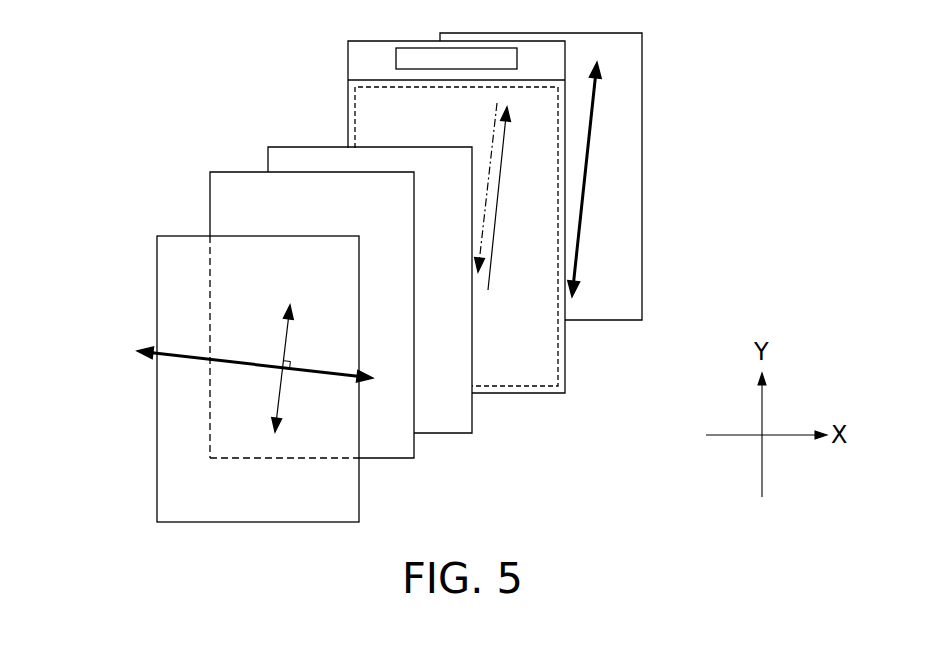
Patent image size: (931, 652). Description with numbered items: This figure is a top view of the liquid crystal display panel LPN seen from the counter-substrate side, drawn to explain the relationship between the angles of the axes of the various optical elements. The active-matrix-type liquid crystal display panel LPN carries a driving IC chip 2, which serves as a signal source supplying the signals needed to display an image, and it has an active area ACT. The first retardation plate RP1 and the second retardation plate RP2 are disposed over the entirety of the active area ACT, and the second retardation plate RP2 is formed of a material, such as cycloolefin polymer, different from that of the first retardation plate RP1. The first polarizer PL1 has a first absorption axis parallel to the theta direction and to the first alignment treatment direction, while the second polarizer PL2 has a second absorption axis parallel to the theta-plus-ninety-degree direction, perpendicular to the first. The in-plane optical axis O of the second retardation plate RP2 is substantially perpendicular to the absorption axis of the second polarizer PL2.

The driving IC chip 2 is at (395, 59).
The active area ACT is at (573, 102).
The optical axis O is at (283, 346).
The first polarizer PL1 is at (605, 321).
The second polarizer PL2 is at (337, 524).
The first retardation plate RP1 is at (448, 434).
The second retardation plate RP2 is at (388, 460).
The liquid crystal display panel LPN is at (522, 389).